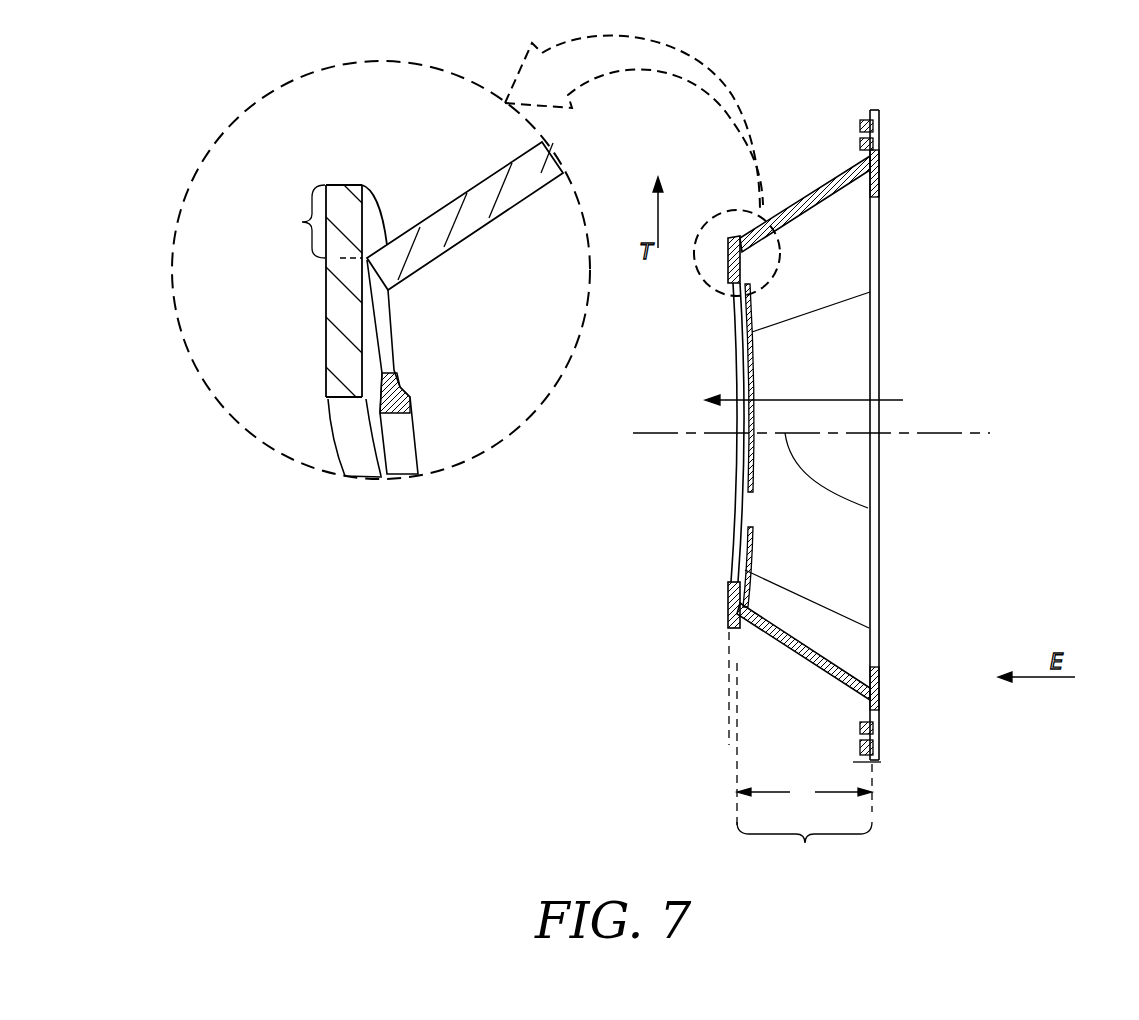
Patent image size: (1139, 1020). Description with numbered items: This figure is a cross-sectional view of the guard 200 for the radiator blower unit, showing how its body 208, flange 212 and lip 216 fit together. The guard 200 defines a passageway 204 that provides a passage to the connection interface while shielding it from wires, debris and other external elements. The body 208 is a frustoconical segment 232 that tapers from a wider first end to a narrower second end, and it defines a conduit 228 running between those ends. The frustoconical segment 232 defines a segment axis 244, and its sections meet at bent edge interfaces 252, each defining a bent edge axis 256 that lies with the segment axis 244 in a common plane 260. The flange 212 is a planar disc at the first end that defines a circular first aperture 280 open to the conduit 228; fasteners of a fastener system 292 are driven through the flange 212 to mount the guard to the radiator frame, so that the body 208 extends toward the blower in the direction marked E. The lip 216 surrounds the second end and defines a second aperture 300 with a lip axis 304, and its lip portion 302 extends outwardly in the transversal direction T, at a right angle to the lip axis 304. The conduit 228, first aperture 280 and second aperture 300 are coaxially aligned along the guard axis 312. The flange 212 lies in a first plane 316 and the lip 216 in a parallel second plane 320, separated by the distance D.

The guard 200 is at (1062, 101).
The passageway 204 is at (880, 400).
The body 208 is at (803, 200).
The flange 212 is at (882, 158).
The lip 216 is at (730, 260).
The conduit 228 is at (824, 228).
The frustoconical segment 232 is at (804, 768).
The segment axis 244 is at (970, 434).
The bent edge interface 252 is at (868, 297).
The bent edge axis 256 is at (868, 508).
The common plane 260 is at (910, 434).
The first aperture 280 is at (873, 333).
The fastener system 292 is at (868, 119).
The second aperture 300 is at (746, 332).
The lip portion 302 is at (298, 222).
The lip axis 304 is at (712, 434).
The guard axis 312 is at (656, 434).
The first plane 316 is at (882, 784).
The second plane 320 is at (729, 652).